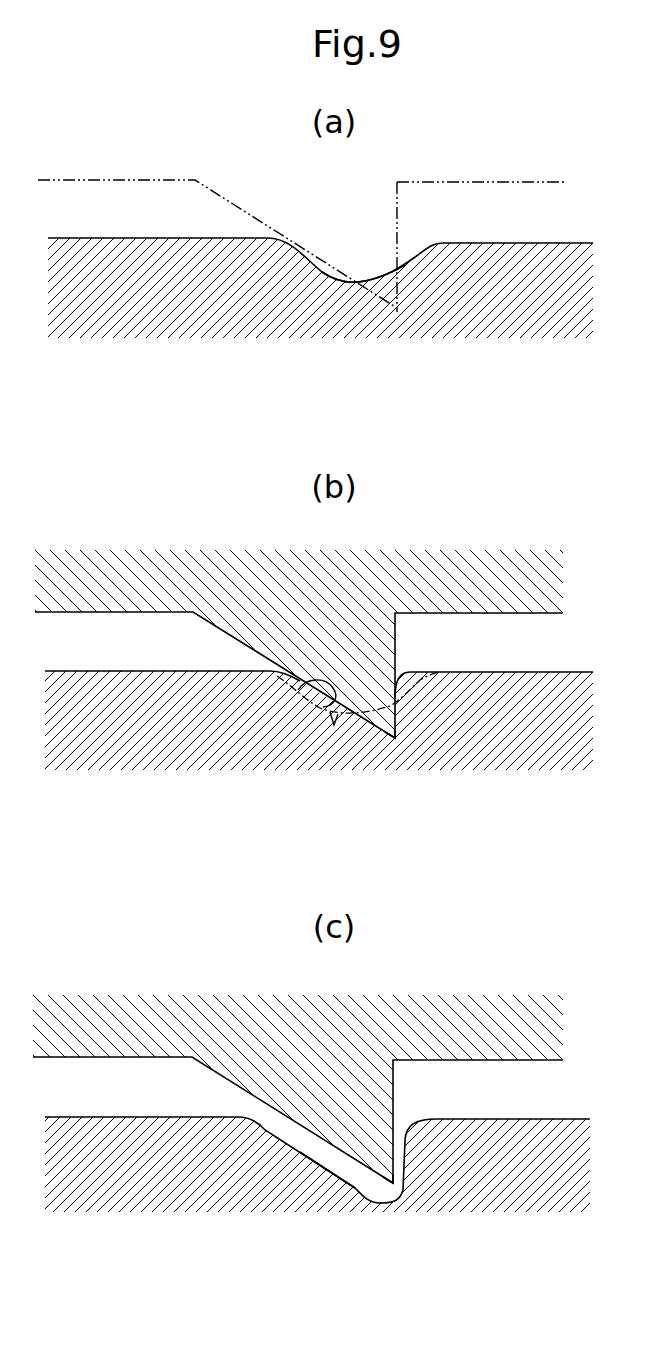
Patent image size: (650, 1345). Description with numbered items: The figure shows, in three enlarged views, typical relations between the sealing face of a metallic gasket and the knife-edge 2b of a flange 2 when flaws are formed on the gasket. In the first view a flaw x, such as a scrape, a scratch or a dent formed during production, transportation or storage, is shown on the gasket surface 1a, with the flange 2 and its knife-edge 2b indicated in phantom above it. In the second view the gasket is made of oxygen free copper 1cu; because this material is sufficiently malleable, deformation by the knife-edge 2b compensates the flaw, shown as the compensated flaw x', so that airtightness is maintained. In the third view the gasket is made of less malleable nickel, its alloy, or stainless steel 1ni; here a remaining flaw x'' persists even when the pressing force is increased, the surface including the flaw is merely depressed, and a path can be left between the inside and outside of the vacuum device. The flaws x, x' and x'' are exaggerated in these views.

The flange 2 is at (499, 180).
The knife-edge 2b is at (397, 312).
The surface of the gasket 1a is at (507, 243).
The gasket made of oxygen free copper 1cu is at (503, 672).
The gasket made of nickel 1ni is at (503, 1119).
The flaw x is at (363, 237).
The compensated flaw x' is at (315, 747).
The remaining flaw x'' is at (323, 1206).